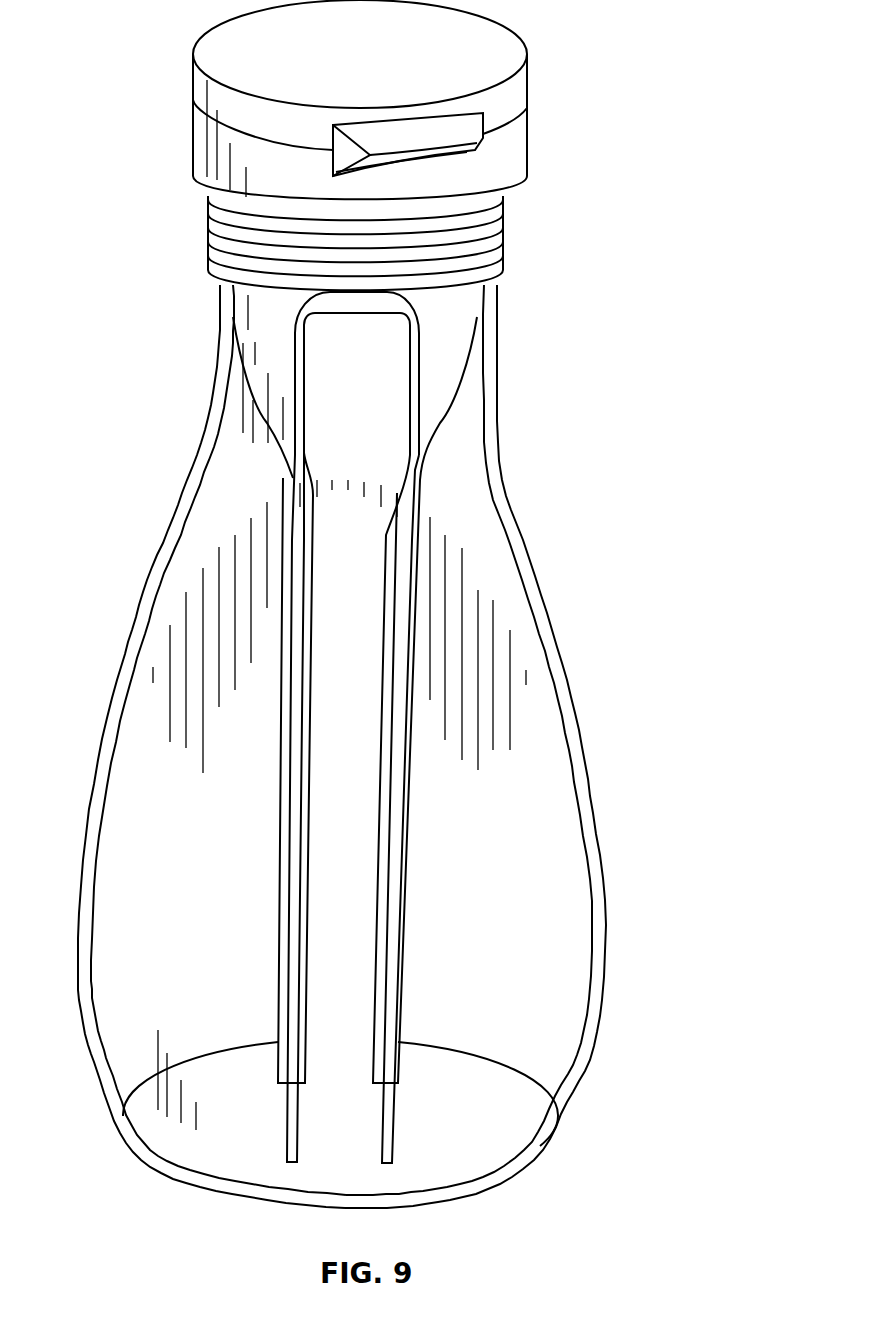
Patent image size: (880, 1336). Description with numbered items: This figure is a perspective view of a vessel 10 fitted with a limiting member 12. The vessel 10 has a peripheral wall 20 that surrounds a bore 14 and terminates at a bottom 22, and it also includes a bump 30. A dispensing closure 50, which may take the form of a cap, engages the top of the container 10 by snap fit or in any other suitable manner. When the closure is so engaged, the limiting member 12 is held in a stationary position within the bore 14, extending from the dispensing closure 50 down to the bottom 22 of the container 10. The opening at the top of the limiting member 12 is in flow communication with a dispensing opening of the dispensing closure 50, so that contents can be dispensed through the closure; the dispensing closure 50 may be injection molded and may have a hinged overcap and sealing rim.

The vessel 10 is at (668, 284).
The limiting member 12 is at (368, 571).
The bore 14 is at (108, 1080).
The peripheral wall 20 is at (513, 541).
The bottom 22 is at (535, 1167).
The bump 30 is at (333, 1107).
The dispensing closure 50 is at (375, 66).